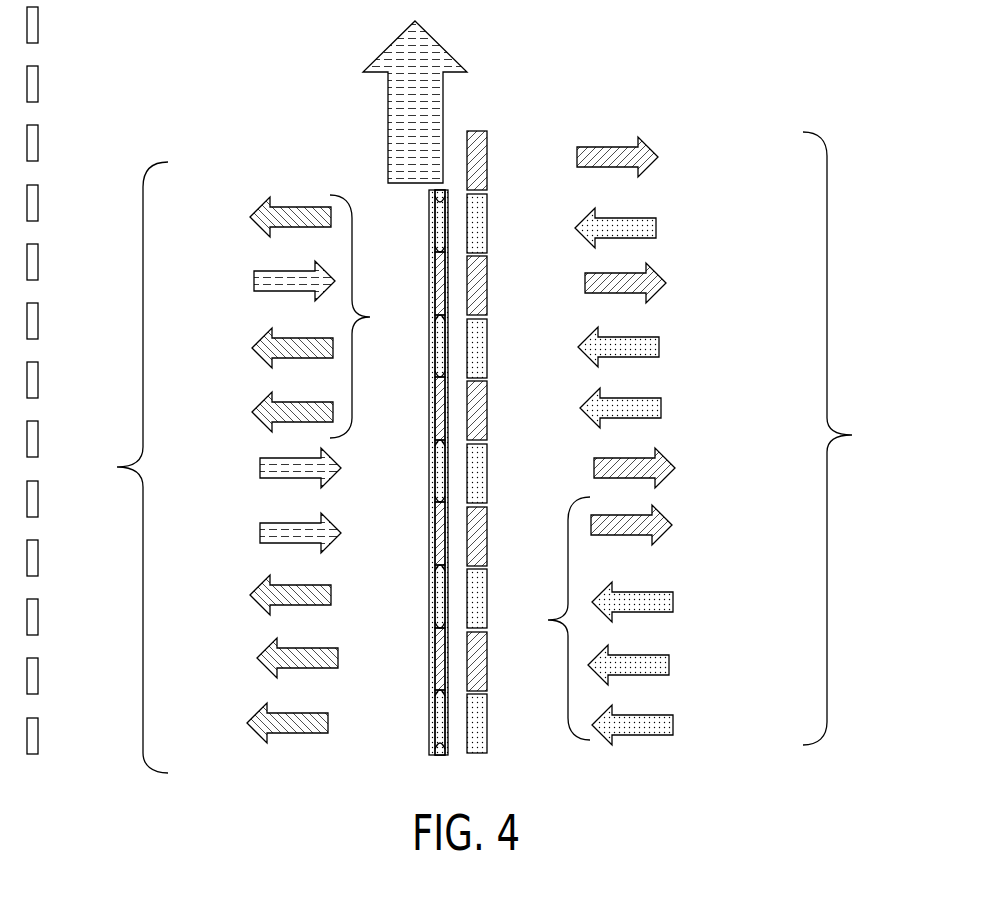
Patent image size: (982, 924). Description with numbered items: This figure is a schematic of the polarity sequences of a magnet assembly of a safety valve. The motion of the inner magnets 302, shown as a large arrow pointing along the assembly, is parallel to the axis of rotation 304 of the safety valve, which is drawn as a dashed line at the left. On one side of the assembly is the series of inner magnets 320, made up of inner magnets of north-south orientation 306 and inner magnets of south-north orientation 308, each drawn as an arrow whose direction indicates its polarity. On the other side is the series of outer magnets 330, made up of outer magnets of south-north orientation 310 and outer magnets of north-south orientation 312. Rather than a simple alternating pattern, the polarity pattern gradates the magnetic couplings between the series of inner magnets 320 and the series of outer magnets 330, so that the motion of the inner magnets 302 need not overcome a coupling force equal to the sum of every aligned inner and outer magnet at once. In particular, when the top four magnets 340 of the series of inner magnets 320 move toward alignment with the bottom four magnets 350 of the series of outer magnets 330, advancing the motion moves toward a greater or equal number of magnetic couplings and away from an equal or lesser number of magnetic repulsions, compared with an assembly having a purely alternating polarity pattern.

The motion of inner magnets 302 is at (455, 58).
The axis of rotation 304 is at (38, 740).
The inner magnets of north-south orientation 306 is at (303, 207).
The inner magnets of south-north orientation 308 is at (253, 283).
The outer magnets of south-north orientation 310 is at (655, 157).
The outer magnets of north-south orientation 312 is at (660, 230).
The series of inner magnets 320 is at (124, 467).
The series of outer magnets 330 is at (850, 438).
The top four magnets of the series of inner magnets 340 is at (369, 316).
The bottom four magnets of the series of outer magnets 350 is at (551, 618).